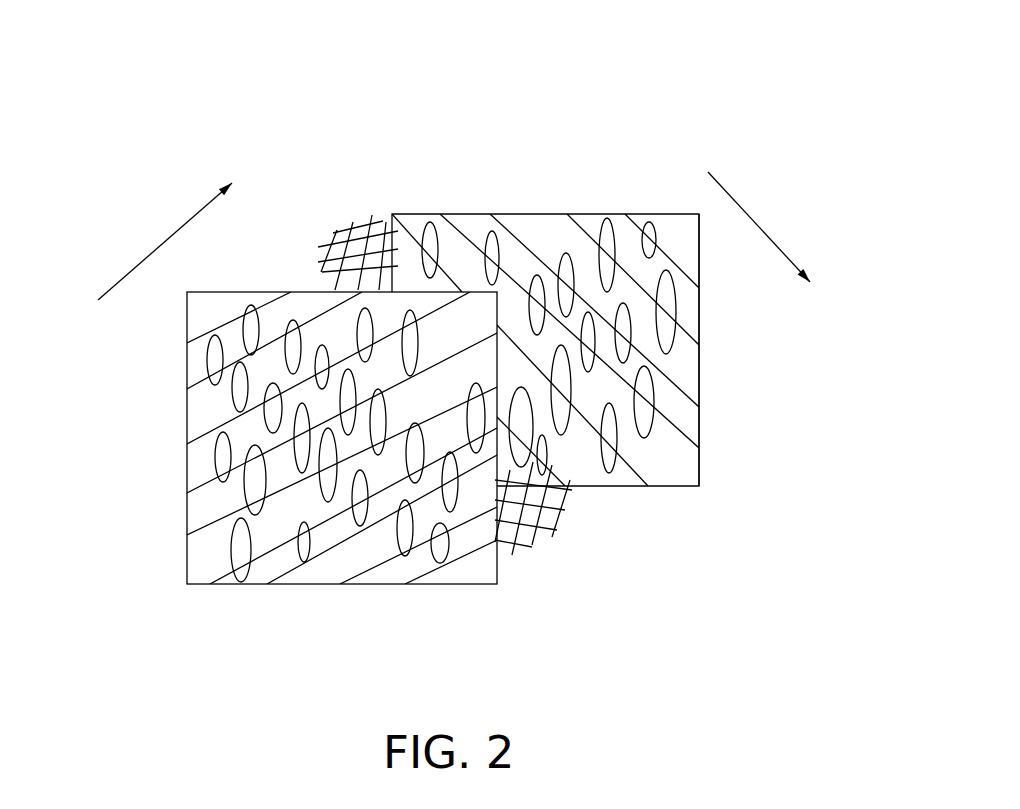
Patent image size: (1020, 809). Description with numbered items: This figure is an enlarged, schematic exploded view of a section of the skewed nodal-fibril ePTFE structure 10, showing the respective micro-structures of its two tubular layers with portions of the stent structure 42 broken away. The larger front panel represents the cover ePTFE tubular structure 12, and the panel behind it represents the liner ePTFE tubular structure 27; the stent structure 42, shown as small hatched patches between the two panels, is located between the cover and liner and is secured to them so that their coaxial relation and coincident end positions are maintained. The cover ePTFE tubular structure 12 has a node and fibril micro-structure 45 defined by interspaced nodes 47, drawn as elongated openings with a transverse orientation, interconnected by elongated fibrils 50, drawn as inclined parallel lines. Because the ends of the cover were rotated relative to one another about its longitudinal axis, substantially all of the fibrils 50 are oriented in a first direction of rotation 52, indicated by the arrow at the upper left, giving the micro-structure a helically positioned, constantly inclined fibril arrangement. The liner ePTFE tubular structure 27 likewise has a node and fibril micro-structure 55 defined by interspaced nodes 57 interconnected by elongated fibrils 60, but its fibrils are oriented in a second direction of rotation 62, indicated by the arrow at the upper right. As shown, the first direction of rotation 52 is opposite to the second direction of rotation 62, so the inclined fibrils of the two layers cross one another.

The skewed nodal-fibril ePTFE structure 10 is at (399, 147).
The cover ePTFE tubular structure 12 is at (218, 600).
The liner ePTFE tubular structure 27 is at (670, 501).
The stent structure 42 is at (360, 243).
The node and fibril micro-structure 45 is at (256, 278).
The nodes 47 is at (325, 502).
The fibrils 50 is at (207, 520).
The first direction of rotation 52 is at (158, 247).
The node and fibril micro-structure 55 is at (714, 442).
The nodes 57 is at (655, 402).
The fibrils 60 is at (590, 238).
The second direction of rotation 62 is at (767, 230).